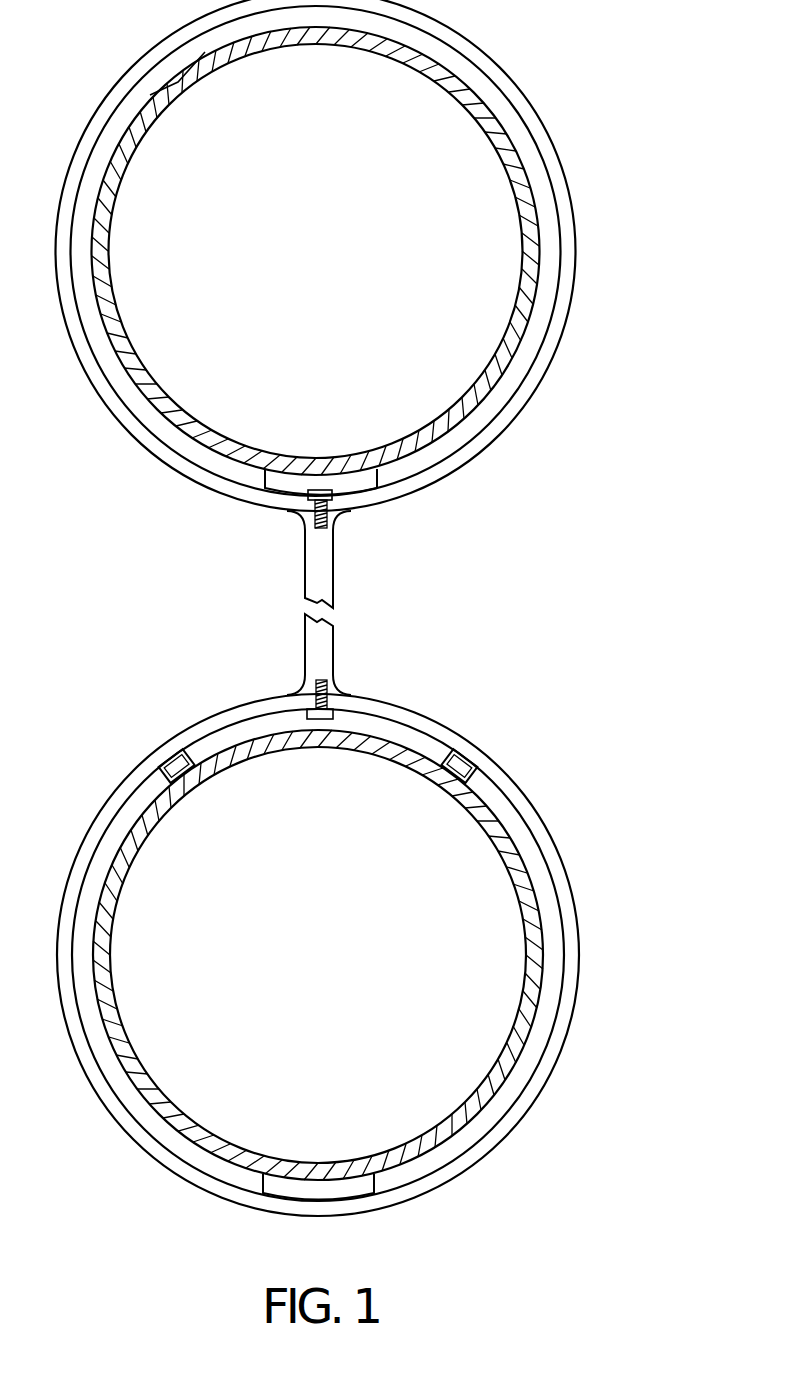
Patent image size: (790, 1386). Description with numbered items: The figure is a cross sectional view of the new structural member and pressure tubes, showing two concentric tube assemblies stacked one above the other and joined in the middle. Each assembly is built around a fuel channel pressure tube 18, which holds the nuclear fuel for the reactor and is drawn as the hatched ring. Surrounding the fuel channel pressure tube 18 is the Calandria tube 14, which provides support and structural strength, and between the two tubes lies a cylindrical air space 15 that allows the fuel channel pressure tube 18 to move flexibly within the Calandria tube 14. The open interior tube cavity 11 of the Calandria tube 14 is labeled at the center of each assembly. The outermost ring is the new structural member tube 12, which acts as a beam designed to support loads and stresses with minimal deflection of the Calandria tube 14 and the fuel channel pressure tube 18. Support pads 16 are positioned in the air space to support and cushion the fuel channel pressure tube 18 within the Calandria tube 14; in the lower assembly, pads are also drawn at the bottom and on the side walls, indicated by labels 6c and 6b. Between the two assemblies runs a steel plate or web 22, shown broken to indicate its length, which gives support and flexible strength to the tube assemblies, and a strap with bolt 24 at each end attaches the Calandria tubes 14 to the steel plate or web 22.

The interior tube cavity 11 is at (333, 278).
The structural member tube 12 is at (447, 23).
The Calandria tube 14 is at (520, 87).
The cylindrical air space 15 is at (538, 238).
The support pad 16 is at (343, 489).
The fuel channel pressure tube 18 is at (183, 82).
The steel plate or web 22 is at (323, 653).
The strap with bolt 24 is at (338, 514).
The side block 6b is at (467, 770).
The bottom block 6c is at (350, 1190).